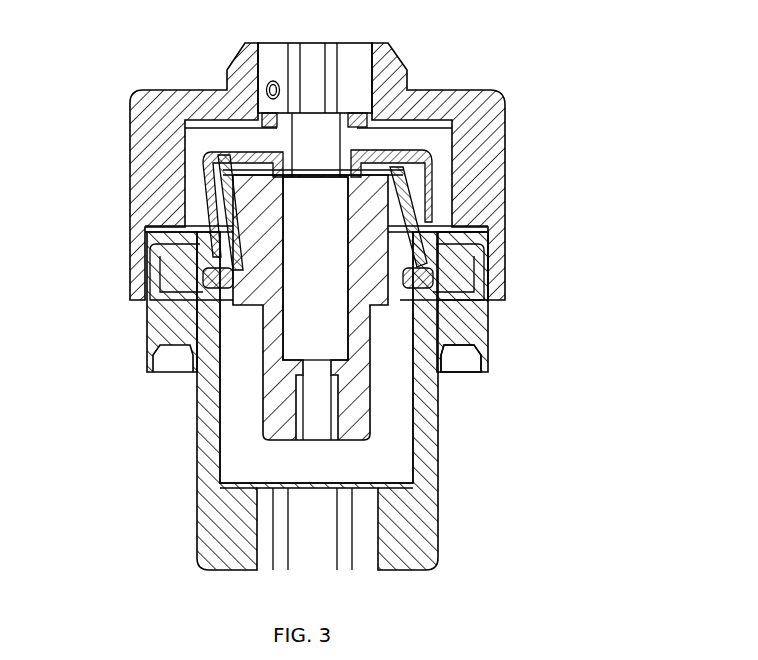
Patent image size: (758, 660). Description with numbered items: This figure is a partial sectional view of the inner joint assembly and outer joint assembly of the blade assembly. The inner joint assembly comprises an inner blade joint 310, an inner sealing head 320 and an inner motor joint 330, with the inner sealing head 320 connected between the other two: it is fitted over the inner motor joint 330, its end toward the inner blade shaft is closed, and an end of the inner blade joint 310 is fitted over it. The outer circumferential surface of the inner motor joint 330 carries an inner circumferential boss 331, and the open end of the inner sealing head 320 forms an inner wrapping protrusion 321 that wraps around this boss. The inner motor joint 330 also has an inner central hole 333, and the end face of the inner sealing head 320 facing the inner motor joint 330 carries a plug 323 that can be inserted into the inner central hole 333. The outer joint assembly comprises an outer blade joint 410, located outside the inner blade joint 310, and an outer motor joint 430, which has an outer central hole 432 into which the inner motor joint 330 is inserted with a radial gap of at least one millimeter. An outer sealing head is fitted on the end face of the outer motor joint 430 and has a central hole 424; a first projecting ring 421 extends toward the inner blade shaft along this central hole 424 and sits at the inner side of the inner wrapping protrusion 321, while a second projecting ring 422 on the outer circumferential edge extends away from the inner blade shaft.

The inner blade joint 310 is at (423, 192).
The inner sealing head 320 is at (430, 228).
The inner wrapping protrusion 321 is at (440, 273).
The plug 323 is at (345, 178).
The inner motor joint 330 is at (357, 393).
The inner circumferential boss 331 is at (230, 268).
The inner central hole 333 is at (318, 303).
The outer blade joint 410 is at (480, 155).
The first projecting ring 421 is at (440, 292).
The second projecting ring 422 is at (485, 335).
The central hole 424 is at (488, 373).
The outer motor joint 430 is at (420, 527).
The outer central hole 432 is at (383, 455).